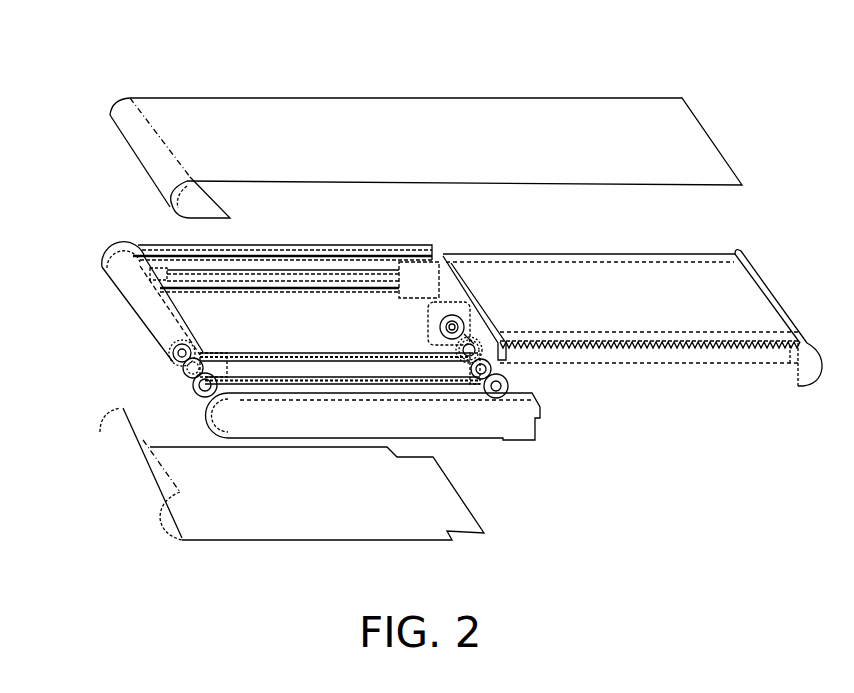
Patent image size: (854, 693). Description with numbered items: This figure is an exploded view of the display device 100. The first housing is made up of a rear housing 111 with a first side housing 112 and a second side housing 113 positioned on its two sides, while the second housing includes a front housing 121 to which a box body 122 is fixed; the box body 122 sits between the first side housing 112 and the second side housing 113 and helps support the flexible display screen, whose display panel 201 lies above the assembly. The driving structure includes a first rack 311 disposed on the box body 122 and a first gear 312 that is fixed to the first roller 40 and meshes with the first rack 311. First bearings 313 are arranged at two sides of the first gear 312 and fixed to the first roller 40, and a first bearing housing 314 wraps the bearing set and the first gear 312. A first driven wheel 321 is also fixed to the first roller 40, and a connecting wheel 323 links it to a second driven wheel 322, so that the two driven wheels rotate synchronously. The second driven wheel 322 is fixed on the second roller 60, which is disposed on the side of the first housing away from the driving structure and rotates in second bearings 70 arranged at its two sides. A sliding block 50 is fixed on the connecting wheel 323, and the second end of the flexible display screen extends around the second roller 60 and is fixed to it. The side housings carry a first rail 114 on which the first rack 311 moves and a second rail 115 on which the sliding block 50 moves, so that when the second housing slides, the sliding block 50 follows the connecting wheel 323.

The display device 100 is at (101, 64).
The display panel 201 is at (143, 145).
The second side housing 113 is at (140, 245).
The first rail 114 is at (278, 262).
The second rail 115 is at (351, 278).
The first roller 40 is at (469, 350).
The box body 122 is at (681, 283).
The second roller 60 is at (137, 285).
The sliding block 50 is at (192, 322).
The second driven wheel 322 is at (185, 370).
The second bearing 70 is at (197, 393).
The first bearing housing 314 is at (431, 310).
The connecting wheel 323 is at (324, 353).
The first gear 312 is at (437, 348).
The first driven wheel 321 is at (492, 366).
The first bearing 313 is at (505, 390).
The first rack 311 is at (768, 348).
The front housing 121 is at (811, 367).
The rear housing 111 is at (158, 485).
The first side housing 112 is at (516, 427).